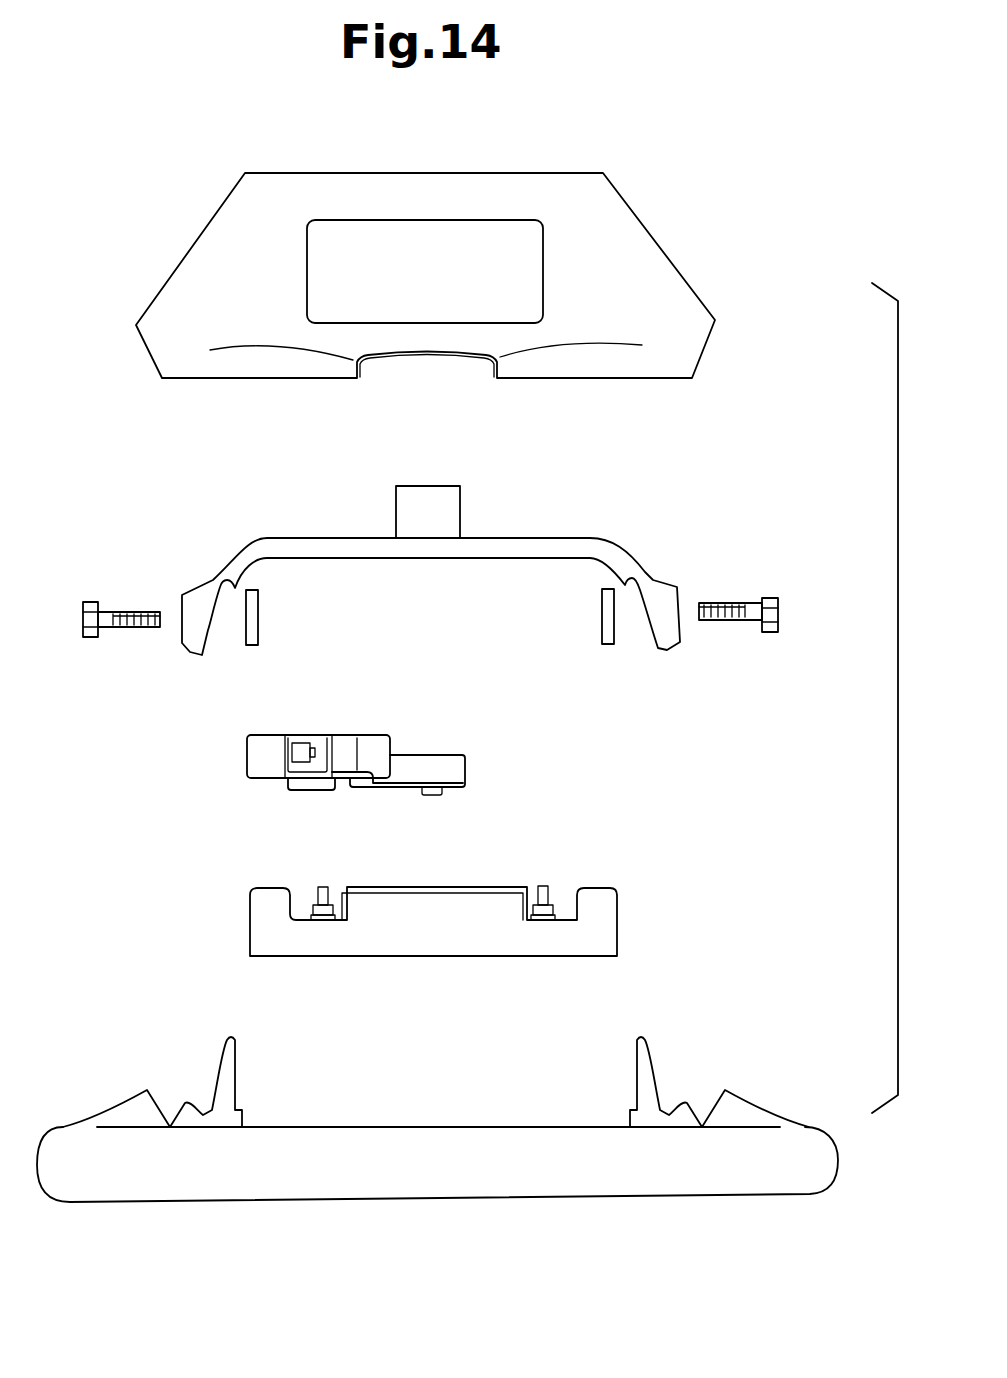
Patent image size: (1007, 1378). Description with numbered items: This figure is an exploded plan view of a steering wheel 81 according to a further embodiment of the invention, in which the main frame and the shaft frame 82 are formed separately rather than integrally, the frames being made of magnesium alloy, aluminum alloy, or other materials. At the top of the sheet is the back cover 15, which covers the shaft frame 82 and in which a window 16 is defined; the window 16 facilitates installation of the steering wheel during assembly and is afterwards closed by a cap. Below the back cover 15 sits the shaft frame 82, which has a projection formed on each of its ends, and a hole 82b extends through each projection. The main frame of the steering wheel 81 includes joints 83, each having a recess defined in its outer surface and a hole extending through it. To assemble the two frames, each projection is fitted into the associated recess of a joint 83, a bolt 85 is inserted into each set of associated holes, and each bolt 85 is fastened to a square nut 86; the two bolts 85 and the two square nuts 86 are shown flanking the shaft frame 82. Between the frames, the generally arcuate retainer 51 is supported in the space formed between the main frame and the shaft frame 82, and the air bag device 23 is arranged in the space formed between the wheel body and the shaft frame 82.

The back cover 15 is at (663, 232).
The window 16 is at (535, 260).
The shaft frame 82 is at (617, 540).
The hole 82b is at (192, 645).
The square nut 86 is at (258, 627).
The bolt 85 is at (93, 602).
The retainer 51 is at (465, 770).
The air bag device 23 is at (617, 915).
The steering wheel 81 is at (895, 1191).
The joint 83 is at (215, 1062).